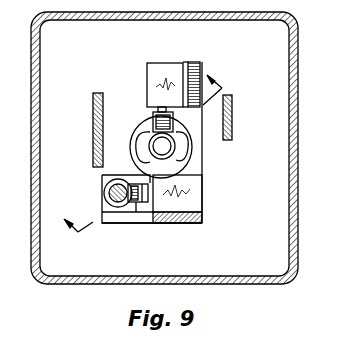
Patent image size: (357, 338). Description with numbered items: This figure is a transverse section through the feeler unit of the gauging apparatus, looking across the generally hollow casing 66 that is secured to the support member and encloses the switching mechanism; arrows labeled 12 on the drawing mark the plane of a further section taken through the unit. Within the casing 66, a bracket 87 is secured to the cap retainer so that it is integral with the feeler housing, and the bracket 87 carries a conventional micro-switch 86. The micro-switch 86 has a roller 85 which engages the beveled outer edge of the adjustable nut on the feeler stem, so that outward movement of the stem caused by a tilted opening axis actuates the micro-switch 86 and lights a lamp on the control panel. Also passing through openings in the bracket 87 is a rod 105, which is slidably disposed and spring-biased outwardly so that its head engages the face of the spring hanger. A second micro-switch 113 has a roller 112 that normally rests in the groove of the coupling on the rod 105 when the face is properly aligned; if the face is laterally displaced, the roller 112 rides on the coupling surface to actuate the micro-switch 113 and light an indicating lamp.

The housing / enclosure direction indicator 12 is at (137, 145).
The casing 66 is at (240, 284).
The roller 85 is at (158, 120).
The micro-switch 86 is at (148, 67).
The bracket 87 is at (150, 224).
The rod 105 is at (108, 187).
The roller 112 is at (132, 204).
The micro-switch 113 is at (200, 191).